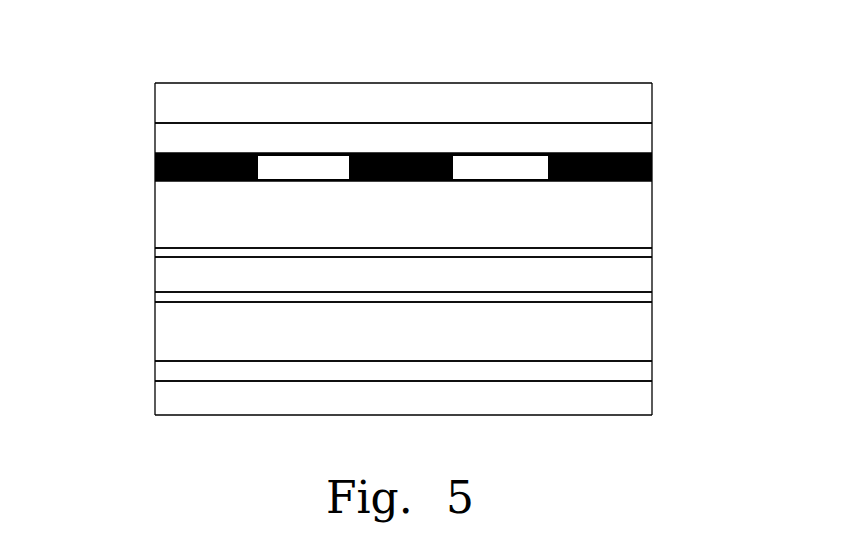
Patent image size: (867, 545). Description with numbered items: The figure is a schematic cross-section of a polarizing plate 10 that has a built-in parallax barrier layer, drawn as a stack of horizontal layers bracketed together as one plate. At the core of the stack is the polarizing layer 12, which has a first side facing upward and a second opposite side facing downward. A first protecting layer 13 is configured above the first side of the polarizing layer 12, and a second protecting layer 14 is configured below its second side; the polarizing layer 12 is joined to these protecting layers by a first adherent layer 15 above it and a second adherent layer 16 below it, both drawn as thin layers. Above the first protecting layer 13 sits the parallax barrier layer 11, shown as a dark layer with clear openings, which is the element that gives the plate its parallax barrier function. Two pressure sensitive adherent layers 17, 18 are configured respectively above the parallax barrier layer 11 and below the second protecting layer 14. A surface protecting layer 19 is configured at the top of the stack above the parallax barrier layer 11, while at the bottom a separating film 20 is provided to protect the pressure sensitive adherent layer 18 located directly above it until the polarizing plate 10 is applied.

The polarizing plate 10 is at (672, 84).
The parallax barrier layer 11 is at (170, 167).
The polarizing layer 12 is at (170, 281).
The first protecting layer 13 is at (170, 212).
The second protecting layer 14 is at (165, 343).
The first adherent layer 15 is at (163, 251).
The second adherent layer 16 is at (163, 296).
The pressure sensitive adherent layer 17 is at (170, 135).
The pressure sensitive adherent layer 18 is at (165, 371).
The surface protecting layer 19 is at (170, 93).
The separating film 20 is at (168, 397).